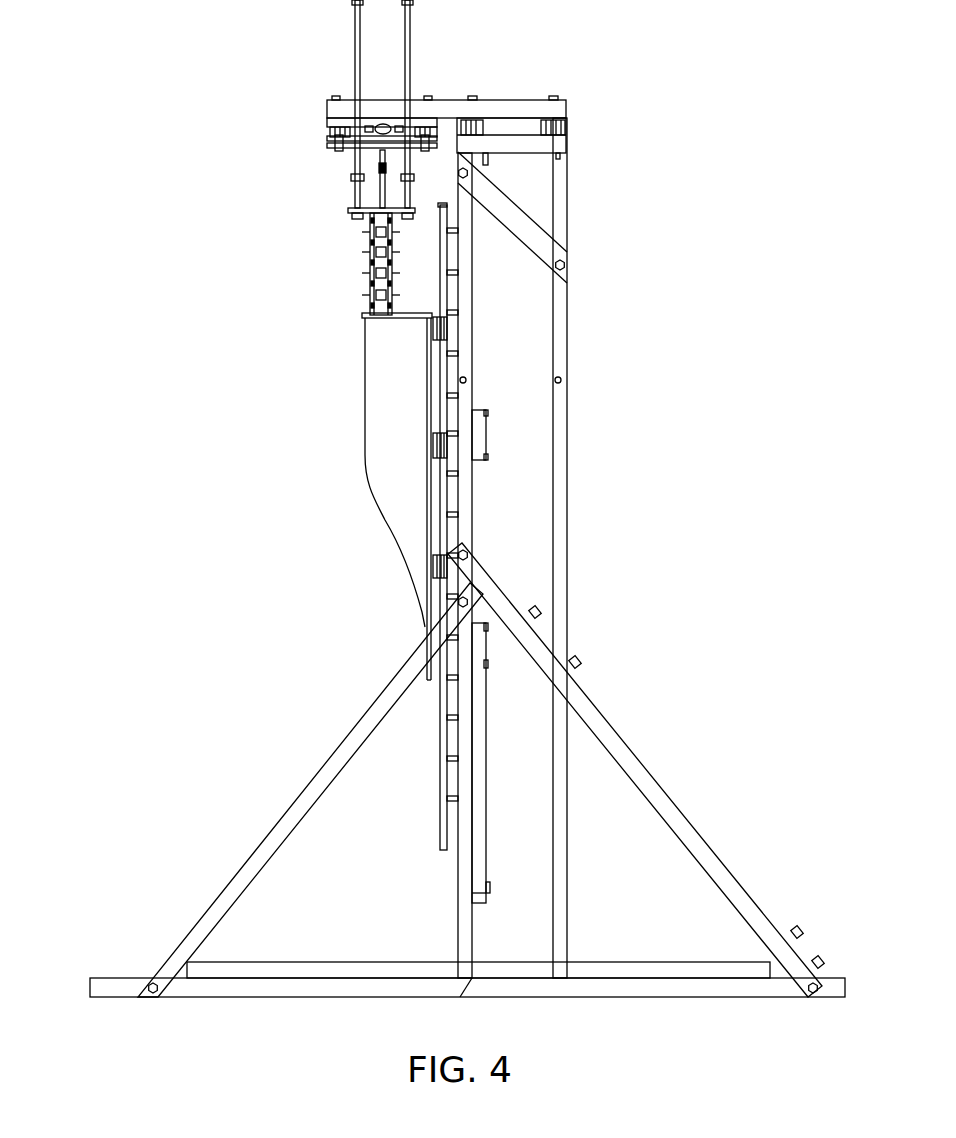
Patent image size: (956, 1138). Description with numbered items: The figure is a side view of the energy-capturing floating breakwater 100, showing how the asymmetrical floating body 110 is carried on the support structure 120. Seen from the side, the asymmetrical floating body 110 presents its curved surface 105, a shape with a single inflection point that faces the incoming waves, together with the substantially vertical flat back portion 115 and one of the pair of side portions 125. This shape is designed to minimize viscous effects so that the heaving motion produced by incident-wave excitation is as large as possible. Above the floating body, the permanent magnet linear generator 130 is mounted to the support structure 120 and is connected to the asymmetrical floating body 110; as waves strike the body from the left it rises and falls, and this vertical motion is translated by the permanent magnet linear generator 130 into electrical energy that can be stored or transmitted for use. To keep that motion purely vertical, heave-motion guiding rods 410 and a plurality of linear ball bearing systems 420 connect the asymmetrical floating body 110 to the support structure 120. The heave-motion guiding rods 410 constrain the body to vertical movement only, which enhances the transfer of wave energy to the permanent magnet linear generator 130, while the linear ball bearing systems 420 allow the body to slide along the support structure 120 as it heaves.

The energy-capturing floating breakwater 100 is at (94, 72).
The curved surface 105 is at (383, 512).
The asymmetrical floating body 110 is at (336, 394).
The substantially vertical flat back portion 115 is at (427, 523).
The support structure 120 is at (527, 108).
The side portion 125 is at (414, 410).
The permanent magnet linear generator 130 is at (318, 173).
The heave-motion guiding rods 410 is at (447, 210).
The linear ball bearing systems 420 is at (447, 330).